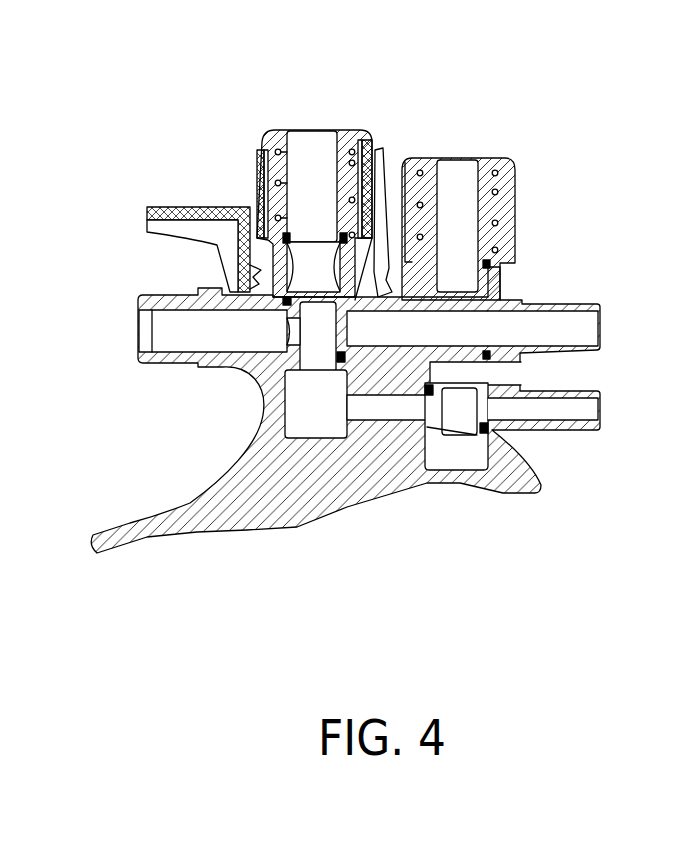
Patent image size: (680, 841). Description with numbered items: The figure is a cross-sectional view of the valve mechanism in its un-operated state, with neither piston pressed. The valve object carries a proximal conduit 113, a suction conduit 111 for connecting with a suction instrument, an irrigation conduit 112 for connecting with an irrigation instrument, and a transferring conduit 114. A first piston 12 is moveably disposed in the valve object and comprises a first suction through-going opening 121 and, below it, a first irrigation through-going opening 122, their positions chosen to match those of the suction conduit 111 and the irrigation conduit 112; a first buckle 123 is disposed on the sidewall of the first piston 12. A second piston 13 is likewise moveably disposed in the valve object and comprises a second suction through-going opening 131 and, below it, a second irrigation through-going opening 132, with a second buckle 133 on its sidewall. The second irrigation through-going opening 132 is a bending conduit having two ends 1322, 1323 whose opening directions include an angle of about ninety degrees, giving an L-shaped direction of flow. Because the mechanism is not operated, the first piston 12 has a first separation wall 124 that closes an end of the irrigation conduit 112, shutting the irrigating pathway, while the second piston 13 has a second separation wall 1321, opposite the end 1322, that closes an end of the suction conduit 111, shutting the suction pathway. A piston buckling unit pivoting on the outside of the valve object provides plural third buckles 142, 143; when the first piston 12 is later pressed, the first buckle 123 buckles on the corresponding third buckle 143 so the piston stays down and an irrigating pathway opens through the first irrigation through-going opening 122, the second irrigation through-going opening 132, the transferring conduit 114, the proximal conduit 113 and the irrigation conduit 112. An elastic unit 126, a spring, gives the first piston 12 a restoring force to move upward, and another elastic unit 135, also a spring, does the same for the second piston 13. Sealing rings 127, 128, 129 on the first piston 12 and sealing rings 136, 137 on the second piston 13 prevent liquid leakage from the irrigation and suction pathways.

The first piston 12 is at (458, 158).
The second piston 13 is at (313, 130).
The suction conduit 111 is at (590, 325).
The irrigation conduit 112 is at (590, 412).
The proximal conduit 113 is at (160, 327).
The transferring conduit 114 is at (314, 430).
The first suction through-going opening 121 is at (473, 323).
The first irrigation through-going opening 122 is at (475, 372).
The first buckle 123 is at (399, 250).
The first separation wall 124 is at (480, 415).
The elastic unit 126 is at (493, 176).
The sealing ring 127 is at (490, 263).
The sealing ring 128 is at (490, 355).
The sealing ring 129 is at (490, 430).
The second suction through-going opening 131 is at (298, 265).
The second irrigation through-going opening 132 is at (291, 369).
The second separation wall 1321 is at (342, 340).
The end of the second irrigation through-going opening 1322 is at (288, 335).
The end of the second irrigation through-going opening 1323 is at (318, 366).
The second buckle 133 is at (260, 222).
The elastic unit 135 is at (280, 149).
The sealing ring 136 is at (283, 238).
The sealing ring 137 is at (282, 302).
The third buckle 142 is at (247, 278).
The third buckle 143 is at (381, 268).